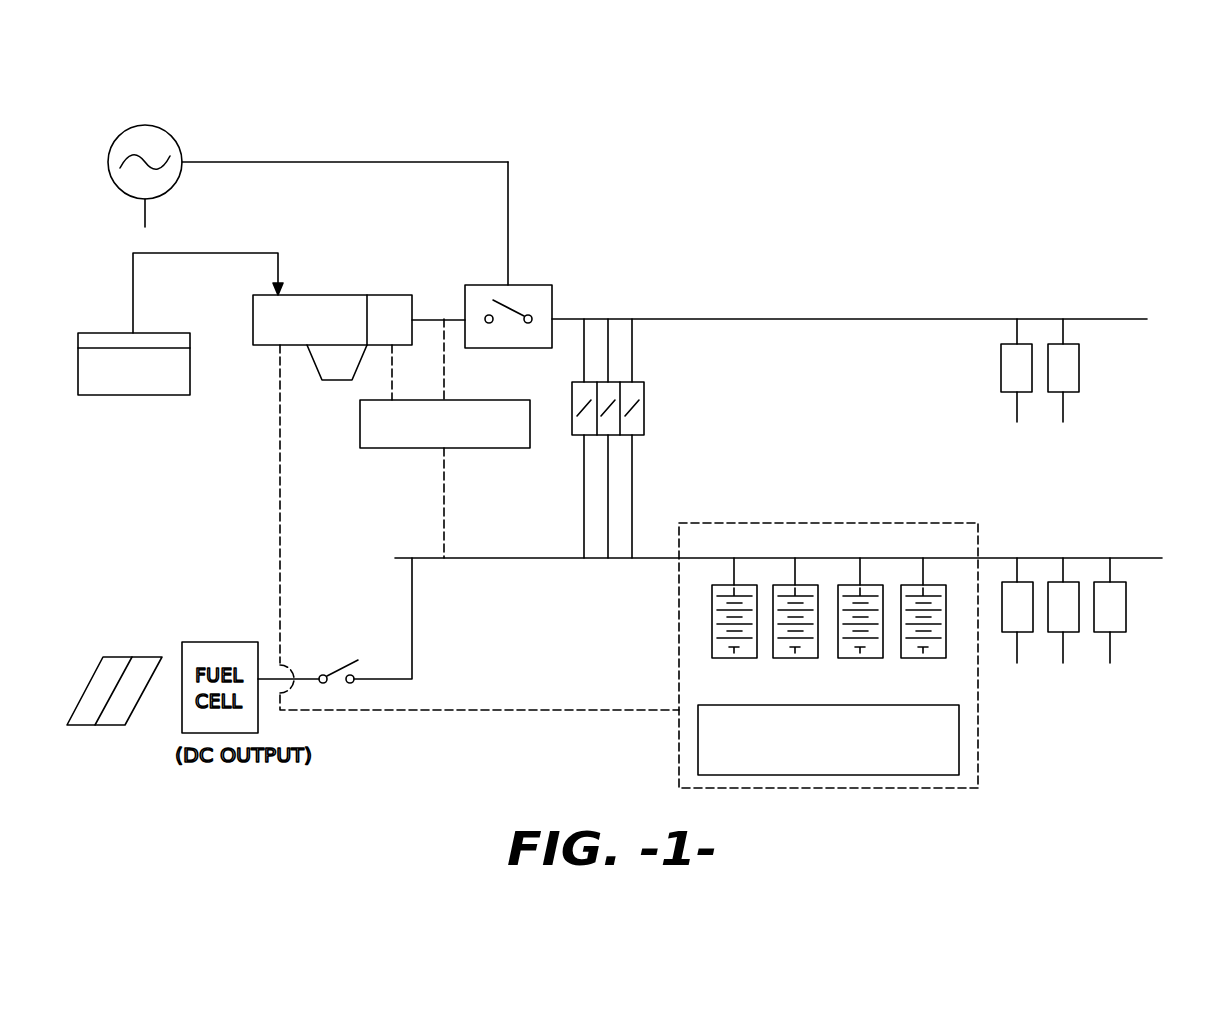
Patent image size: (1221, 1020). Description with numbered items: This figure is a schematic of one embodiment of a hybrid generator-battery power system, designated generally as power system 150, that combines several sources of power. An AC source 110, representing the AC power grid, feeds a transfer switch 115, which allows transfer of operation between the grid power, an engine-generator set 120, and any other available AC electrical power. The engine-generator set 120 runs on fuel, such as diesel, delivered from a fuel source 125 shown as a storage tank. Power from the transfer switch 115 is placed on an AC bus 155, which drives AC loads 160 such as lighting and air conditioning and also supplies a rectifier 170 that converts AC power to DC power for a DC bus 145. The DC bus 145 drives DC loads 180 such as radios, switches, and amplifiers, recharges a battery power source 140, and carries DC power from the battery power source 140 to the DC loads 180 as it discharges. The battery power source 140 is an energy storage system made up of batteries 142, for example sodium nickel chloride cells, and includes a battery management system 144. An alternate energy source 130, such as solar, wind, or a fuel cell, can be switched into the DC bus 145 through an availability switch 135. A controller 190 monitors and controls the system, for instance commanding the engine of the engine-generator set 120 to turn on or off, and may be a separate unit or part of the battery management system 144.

The AC generator 110 is at (170, 134).
The transfer switch 115 is at (541, 285).
The engine-generator set 120 is at (338, 295).
The fuel source 125 is at (148, 332).
The alternate energy source 130 is at (128, 638).
The availability switch 135 is at (328, 656).
The battery power source 140 is at (858, 524).
The batteries 142 is at (785, 658).
The battery management system 144 is at (872, 775).
The DC bus 145 is at (444, 560).
The power system 150 is at (1070, 212).
The AC bus 155 is at (925, 318).
The AC loads 160 is at (1147, 336).
The rectifier 170 is at (638, 382).
The DC loads 180 is at (1164, 573).
The controller 190 is at (400, 448).